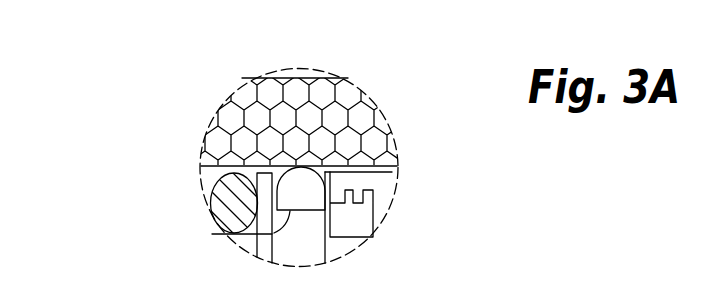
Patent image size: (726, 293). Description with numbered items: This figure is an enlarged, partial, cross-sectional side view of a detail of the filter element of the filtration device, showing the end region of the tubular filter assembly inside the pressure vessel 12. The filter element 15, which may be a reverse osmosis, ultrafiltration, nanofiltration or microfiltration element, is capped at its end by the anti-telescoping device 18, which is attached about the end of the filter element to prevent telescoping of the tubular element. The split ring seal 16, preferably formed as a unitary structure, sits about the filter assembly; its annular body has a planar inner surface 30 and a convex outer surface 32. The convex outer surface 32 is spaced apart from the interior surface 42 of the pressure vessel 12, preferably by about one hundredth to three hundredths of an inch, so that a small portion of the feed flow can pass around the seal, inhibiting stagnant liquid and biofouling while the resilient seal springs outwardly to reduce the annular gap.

The pressure vessel 12 is at (304, 77).
The convex outer surface 32 is at (283, 163).
The split ring seal 16 is at (340, 163).
The filter element 15 is at (395, 166).
The interior surface 42 is at (206, 166).
The planar inner surface 30 is at (232, 223).
The anti-telescoping device 18 is at (373, 210).